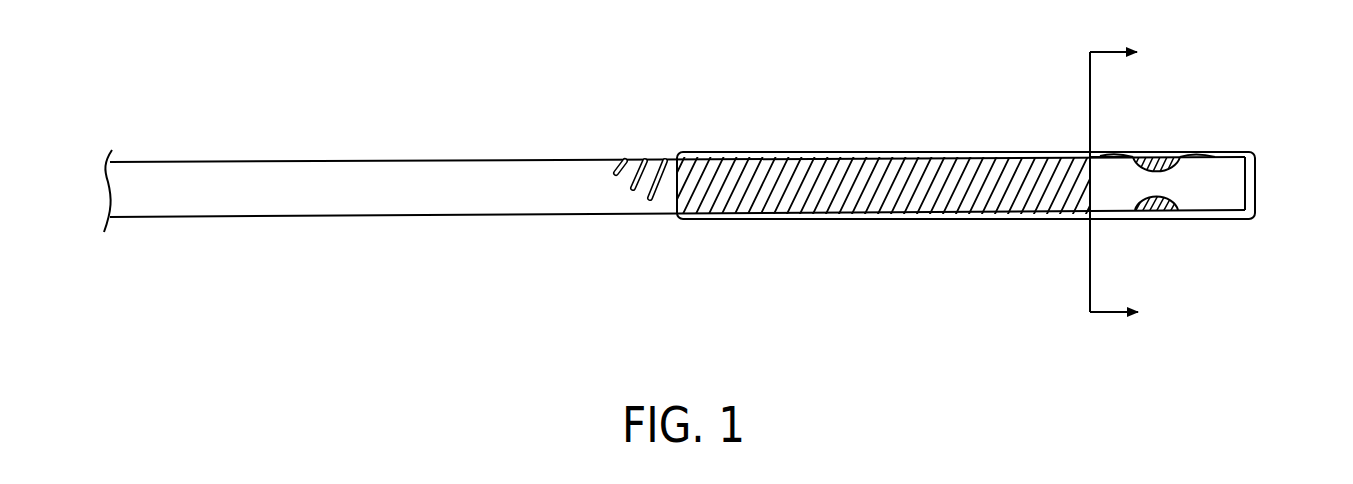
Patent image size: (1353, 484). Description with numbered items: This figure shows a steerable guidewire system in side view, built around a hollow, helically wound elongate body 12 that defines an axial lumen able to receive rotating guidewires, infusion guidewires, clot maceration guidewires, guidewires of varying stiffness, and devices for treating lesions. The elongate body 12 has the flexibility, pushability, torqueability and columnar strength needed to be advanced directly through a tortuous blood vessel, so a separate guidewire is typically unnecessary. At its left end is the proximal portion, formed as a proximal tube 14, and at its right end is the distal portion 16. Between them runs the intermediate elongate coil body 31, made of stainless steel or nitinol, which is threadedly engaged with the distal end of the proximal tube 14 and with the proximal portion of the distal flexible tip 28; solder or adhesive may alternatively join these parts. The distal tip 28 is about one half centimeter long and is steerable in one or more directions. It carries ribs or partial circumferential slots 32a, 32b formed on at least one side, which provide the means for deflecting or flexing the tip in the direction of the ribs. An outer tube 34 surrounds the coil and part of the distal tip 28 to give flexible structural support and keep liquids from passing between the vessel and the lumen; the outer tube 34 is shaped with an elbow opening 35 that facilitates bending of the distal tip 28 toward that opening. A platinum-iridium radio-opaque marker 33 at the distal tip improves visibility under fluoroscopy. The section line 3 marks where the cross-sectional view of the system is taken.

The elongate body 12 is at (388, 197).
The proximal tube 14 is at (132, 175).
The distal portion 16 is at (678, 150).
The distal flexible tip 28 is at (1108, 170).
The intermediate elongate coil body 31 is at (880, 168).
The ribs or partial circumferential slots 32a is at (1158, 212).
The ribs or partial circumferential slots 32b is at (1173, 157).
The radio-opaque marker 33 is at (1253, 150).
The outer tube 34 is at (952, 220).
The elbow opening 35 is at (1163, 140).
The section line 3- 3 is at (1114, 184).